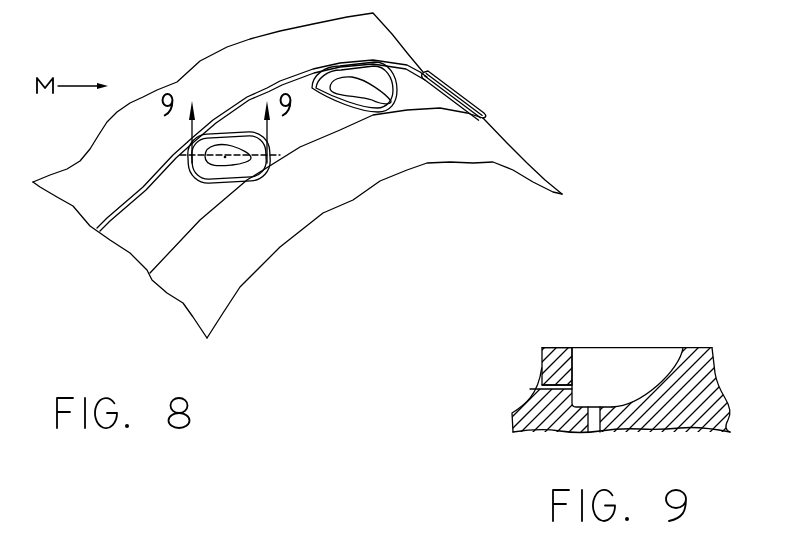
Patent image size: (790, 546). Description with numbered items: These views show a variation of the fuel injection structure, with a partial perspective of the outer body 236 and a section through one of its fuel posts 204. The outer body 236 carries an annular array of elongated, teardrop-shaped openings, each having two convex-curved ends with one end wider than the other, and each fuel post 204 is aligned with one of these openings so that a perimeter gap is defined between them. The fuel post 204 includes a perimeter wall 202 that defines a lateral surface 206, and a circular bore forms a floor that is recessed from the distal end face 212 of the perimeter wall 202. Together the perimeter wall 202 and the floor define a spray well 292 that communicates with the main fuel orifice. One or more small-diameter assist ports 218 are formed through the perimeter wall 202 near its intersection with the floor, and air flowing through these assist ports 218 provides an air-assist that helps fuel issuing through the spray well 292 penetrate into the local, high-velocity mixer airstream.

In FIG. 8, the fuel post 204 is at (215, 111).
In FIG. 8, the assist port 218 is at (259, 174).
In FIG. 9, the assist port 218 is at (577, 351).
In FIG. 8, the outer body 236 is at (384, 250).
In FIG. 9, the distal end face 212 is at (548, 354).
In FIG. 9, the spray well 292 is at (627, 329).
In FIG. 9, the perimeter wall 202 is at (652, 374).
In FIG. 9, the lateral surface 206 is at (746, 382).